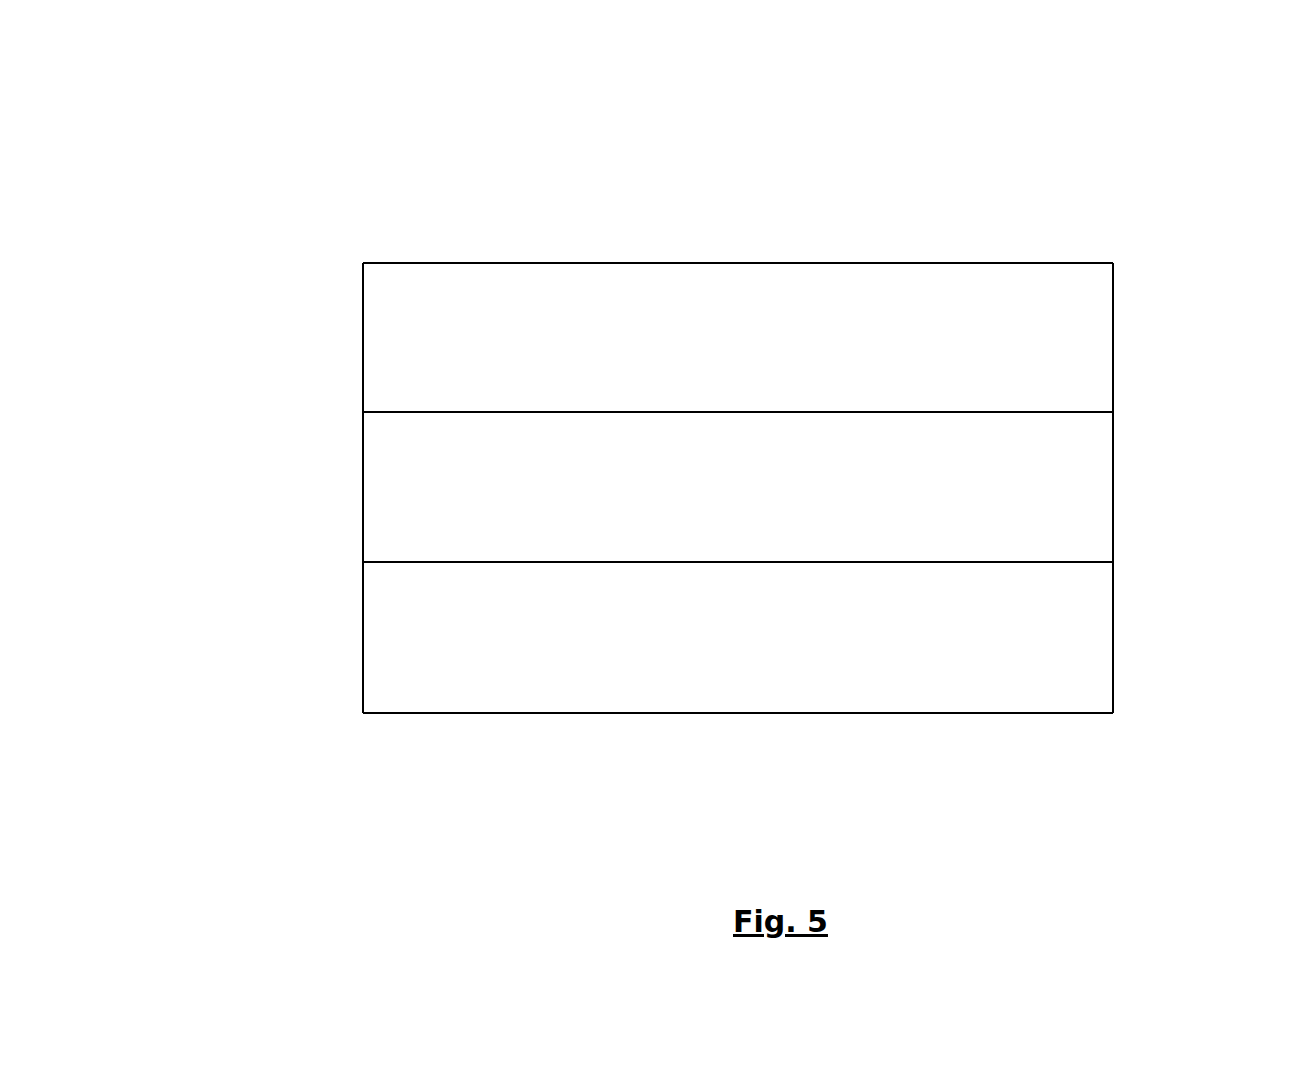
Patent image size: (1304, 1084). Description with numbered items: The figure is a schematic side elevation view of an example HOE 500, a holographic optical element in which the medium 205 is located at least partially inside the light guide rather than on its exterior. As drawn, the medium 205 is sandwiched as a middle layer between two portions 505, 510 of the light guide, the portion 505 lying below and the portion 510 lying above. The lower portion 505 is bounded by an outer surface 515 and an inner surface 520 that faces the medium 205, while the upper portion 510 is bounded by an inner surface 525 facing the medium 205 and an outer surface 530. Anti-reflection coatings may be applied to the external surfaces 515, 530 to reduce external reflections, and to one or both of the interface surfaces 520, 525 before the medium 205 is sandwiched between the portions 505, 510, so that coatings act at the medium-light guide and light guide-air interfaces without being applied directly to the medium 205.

The HOE 500 is at (284, 124).
The portion of the light guide 505 is at (1097, 646).
The medium 205 is at (1097, 500).
The portion of the light guide 510 is at (1097, 346).
The surface 515 is at (410, 713).
The surface 520 is at (403, 562).
The surface 525 is at (410, 412).
The surface 530 is at (407, 263).